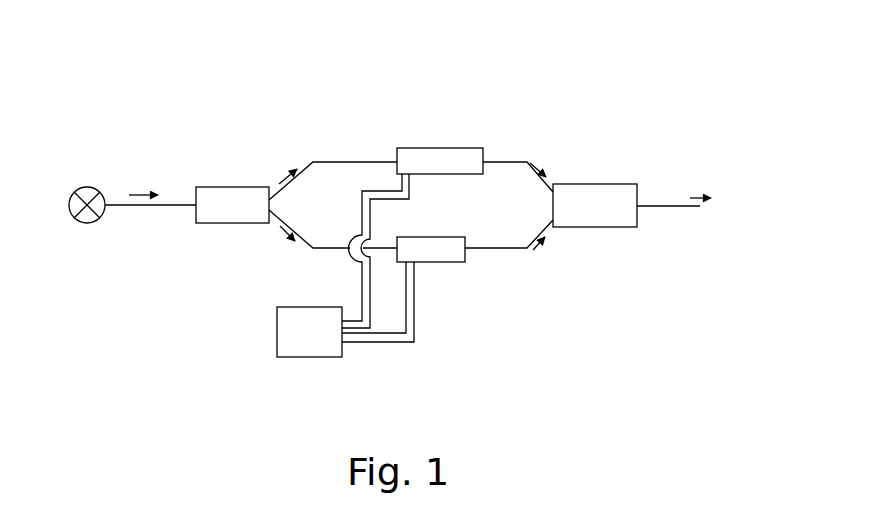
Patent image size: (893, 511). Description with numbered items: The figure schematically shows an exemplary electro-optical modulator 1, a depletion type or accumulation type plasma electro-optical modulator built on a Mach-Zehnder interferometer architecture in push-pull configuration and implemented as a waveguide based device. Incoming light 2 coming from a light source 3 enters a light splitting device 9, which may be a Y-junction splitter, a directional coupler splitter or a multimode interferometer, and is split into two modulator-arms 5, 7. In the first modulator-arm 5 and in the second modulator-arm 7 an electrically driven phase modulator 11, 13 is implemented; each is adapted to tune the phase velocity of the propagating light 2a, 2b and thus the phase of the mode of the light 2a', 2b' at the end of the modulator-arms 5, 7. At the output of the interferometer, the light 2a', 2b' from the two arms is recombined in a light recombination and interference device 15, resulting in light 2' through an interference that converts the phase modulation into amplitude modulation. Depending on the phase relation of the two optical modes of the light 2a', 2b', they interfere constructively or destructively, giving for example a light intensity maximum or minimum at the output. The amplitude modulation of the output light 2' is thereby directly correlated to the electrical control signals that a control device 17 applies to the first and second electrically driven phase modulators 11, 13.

The electro-optical modulator 1 is at (194, 82).
The incoming light 2 is at (154, 150).
The output light 2' is at (725, 159).
The propagating light in first modulator-arm 2a is at (286, 144).
The propagating light in second modulator-arm 2b is at (250, 257).
The light at end of first modulator-arm 2a' is at (565, 134).
The light at end of second modulator-arm 2b' is at (571, 280).
The light source 3 is at (90, 186).
The first modulator-arm 5 is at (359, 153).
The second modulator-arm 7 is at (316, 262).
The light splitting device 9 is at (232, 186).
The first electrically driven phase modulator 11 is at (442, 147).
The second electrically driven phase modulator 13 is at (433, 263).
The light recombination and interference device 15 is at (596, 183).
The control device 17 is at (308, 358).